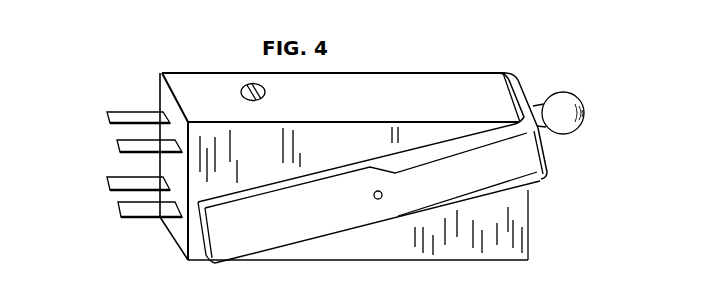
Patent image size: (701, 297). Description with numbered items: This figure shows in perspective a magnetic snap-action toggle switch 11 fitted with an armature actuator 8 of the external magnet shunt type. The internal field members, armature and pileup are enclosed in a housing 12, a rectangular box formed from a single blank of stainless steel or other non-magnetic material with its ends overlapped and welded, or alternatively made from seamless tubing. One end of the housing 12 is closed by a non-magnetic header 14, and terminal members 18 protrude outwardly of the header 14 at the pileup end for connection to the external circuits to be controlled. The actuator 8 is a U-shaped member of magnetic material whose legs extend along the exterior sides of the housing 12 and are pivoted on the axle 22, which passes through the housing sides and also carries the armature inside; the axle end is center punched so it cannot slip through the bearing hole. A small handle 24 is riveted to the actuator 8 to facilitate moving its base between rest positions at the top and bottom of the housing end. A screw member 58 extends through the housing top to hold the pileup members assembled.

The magnetic snap-action toggle switch 11 is at (450, 66).
The housing 12 is at (357, 84).
The header 14 is at (166, 93).
The terminal members 18 is at (107, 141).
The screw member 58 is at (265, 92).
The armature actuator 8 is at (543, 178).
The axle 22 is at (383, 195).
The handle 24 is at (567, 93).